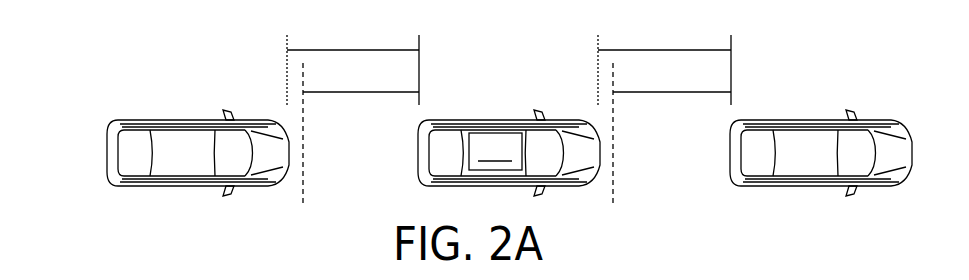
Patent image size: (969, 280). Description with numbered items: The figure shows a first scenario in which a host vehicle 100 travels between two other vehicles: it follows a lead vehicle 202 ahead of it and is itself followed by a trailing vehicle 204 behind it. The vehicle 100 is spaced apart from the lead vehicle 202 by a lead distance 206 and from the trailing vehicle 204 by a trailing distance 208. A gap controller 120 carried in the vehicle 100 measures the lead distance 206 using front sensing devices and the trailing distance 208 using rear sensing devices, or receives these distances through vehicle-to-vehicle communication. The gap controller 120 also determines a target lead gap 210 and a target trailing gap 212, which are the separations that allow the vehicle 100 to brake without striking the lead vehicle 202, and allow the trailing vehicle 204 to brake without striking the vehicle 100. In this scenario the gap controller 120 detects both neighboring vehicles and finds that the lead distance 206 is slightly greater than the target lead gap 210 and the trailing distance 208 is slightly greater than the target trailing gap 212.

The vehicle 100 is at (493, 118).
The gap controller 120 is at (495, 151).
The lead vehicle 202 is at (803, 118).
The trailing vehicle 204 is at (183, 118).
The lead distance 206 is at (662, 48).
The trailing distance 208 is at (352, 48).
The target lead gap 210 is at (670, 90).
The target trailing gap 212 is at (360, 90).